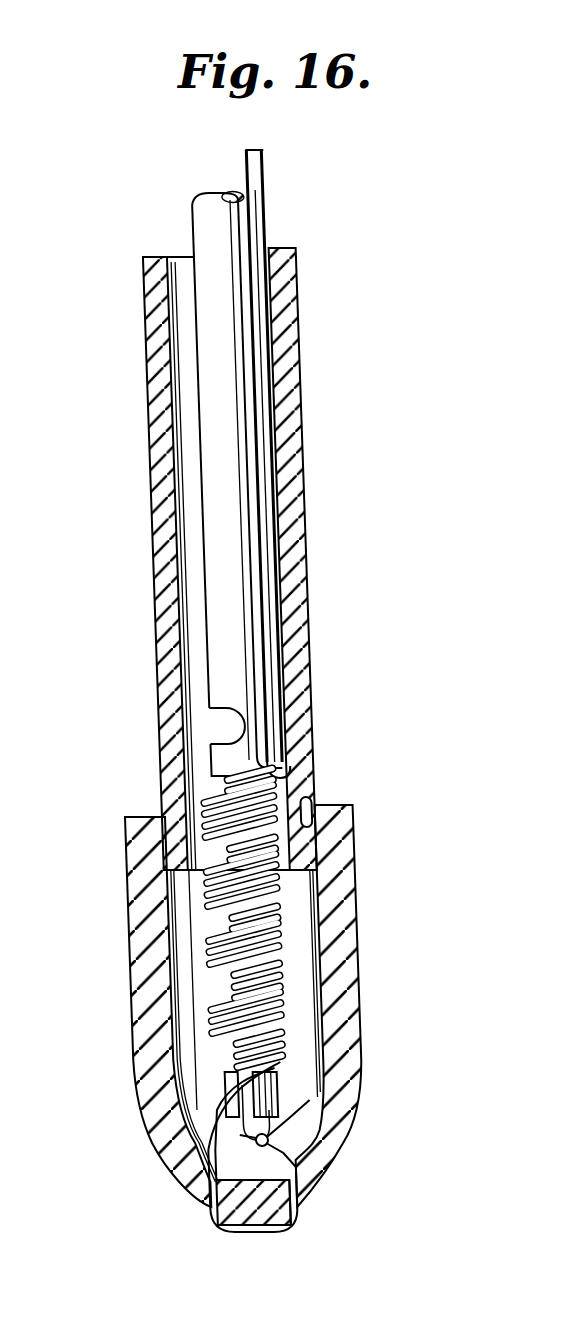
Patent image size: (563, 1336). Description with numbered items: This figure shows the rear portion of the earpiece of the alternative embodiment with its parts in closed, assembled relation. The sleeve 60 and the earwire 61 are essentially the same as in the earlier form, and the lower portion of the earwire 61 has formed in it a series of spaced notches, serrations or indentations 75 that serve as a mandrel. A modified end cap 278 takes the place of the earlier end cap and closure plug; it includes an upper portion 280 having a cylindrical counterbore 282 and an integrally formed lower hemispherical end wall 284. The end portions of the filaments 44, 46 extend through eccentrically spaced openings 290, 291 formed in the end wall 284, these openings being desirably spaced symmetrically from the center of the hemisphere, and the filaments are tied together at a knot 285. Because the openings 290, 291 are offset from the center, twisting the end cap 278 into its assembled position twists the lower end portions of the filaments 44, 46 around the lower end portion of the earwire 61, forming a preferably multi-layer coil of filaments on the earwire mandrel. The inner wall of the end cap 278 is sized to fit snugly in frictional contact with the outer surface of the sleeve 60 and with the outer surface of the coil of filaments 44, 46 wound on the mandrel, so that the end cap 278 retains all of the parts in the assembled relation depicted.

The filament 44 is at (245, 158).
The filament 46 is at (266, 186).
The sleeve 60 is at (147, 316).
The earwire 61 is at (228, 458).
The notches 75 is at (232, 718).
The end cap 278 is at (117, 798).
The upper portion 280 is at (150, 945).
The cylindrical counterbore 282 is at (310, 793).
The hemispherical end wall 284 is at (178, 1175).
The knot 285 is at (307, 1109).
The opening 290 is at (210, 1207).
The opening 291 is at (297, 1190).